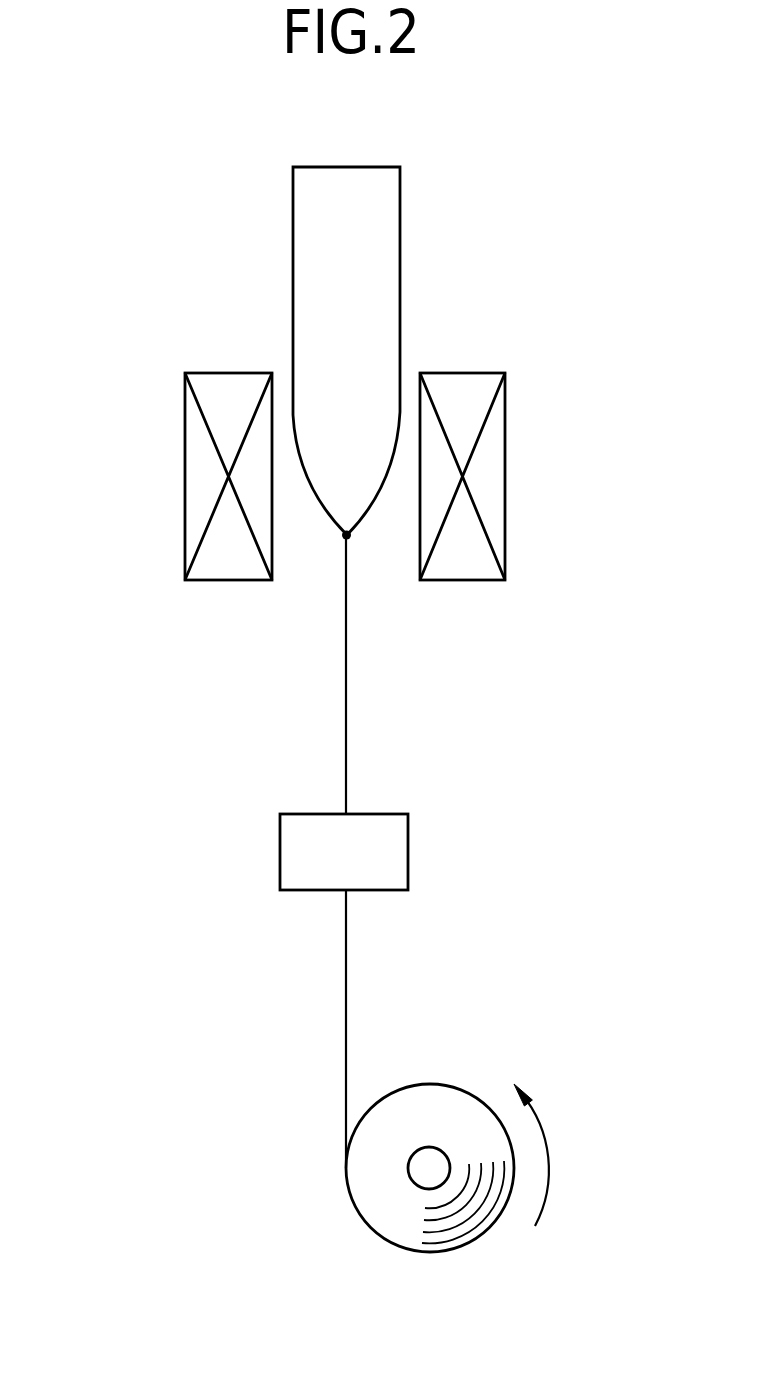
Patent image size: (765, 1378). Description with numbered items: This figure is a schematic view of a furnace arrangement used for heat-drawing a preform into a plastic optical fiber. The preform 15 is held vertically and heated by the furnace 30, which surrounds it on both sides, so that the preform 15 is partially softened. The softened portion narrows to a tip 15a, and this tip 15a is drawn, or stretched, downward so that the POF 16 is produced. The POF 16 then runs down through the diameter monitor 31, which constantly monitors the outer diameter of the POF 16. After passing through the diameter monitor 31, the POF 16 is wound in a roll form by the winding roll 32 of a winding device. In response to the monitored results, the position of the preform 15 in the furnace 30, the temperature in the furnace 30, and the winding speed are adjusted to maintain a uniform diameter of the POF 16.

The preform 15 is at (400, 293).
The tip 15a is at (350, 540).
The furnace 30 is at (185, 480).
The POF 16 is at (346, 672).
The diameter monitor 31 is at (408, 850).
The winding roll 32 is at (429, 1168).